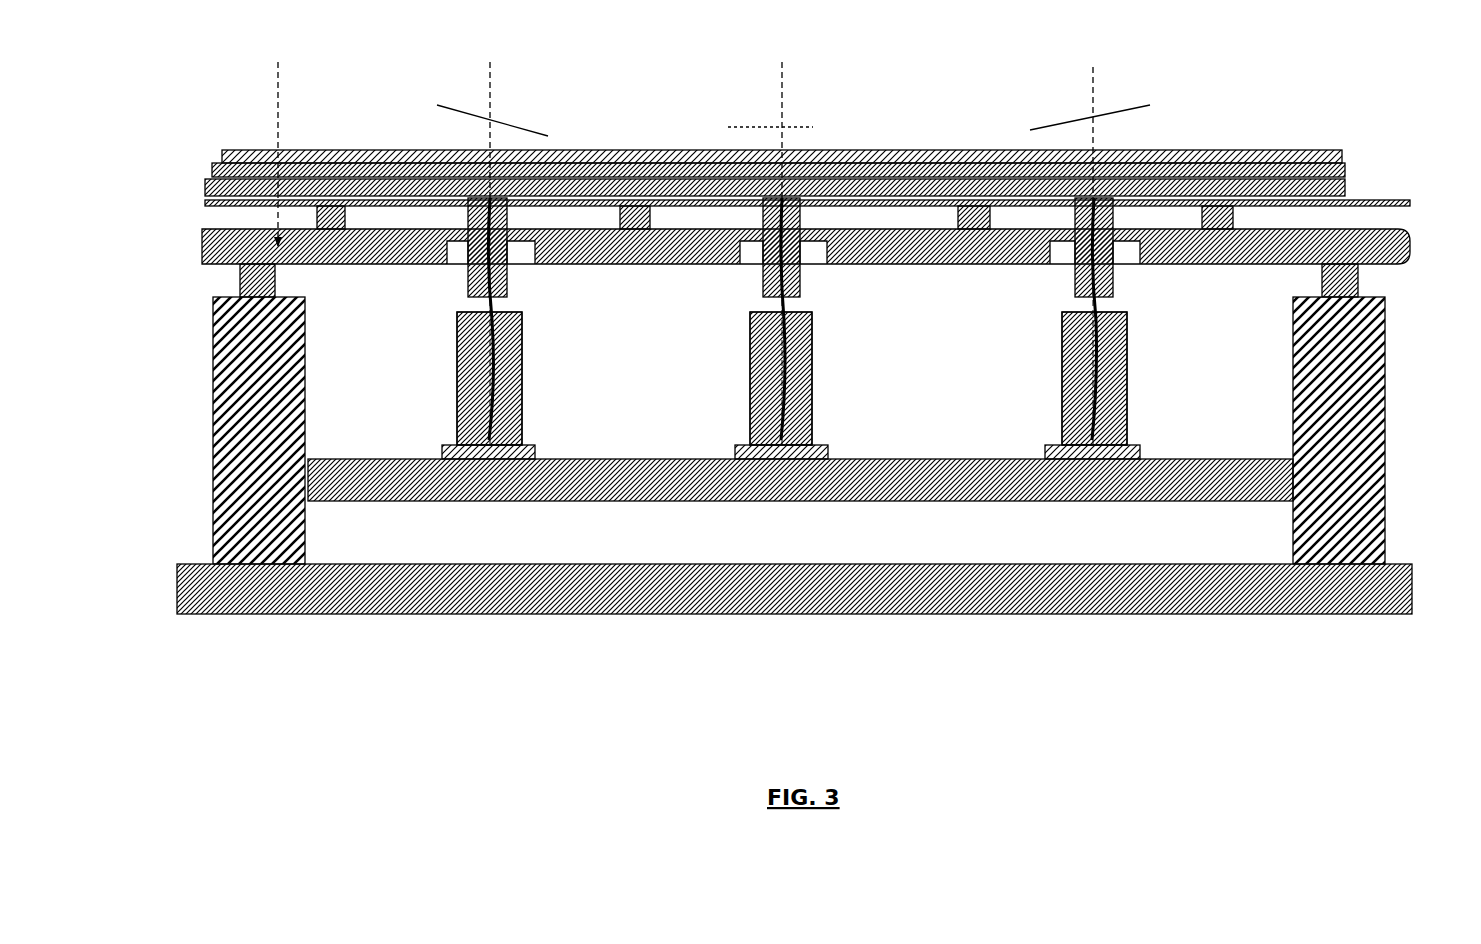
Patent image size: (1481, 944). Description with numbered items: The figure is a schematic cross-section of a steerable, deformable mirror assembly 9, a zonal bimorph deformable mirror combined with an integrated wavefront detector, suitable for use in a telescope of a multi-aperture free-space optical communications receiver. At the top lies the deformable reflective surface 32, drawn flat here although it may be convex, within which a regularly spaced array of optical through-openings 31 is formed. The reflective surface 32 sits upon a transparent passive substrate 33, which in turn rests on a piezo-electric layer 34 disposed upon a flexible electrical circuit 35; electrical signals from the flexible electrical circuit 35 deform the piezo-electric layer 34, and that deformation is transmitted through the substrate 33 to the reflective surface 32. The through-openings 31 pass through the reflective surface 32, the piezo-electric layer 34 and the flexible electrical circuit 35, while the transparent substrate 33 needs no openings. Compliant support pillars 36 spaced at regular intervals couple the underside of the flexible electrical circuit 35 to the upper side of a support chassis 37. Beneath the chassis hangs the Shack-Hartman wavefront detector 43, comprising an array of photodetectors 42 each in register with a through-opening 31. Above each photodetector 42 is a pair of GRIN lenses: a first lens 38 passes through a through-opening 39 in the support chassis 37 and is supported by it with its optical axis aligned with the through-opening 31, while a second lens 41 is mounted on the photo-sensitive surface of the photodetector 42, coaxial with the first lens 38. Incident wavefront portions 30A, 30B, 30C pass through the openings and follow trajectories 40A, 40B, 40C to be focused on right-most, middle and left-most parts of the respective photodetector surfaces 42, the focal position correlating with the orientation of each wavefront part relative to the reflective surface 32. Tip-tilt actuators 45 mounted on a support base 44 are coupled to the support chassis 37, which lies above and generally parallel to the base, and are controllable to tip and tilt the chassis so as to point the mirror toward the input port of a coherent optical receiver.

The steerable, deformable mirror assembly 9 is at (336, 676).
The first wavefront portion 30A is at (531, 130).
The second wavefront portion 30B is at (772, 122).
The third wavefront portion 30C is at (1119, 100).
The optical through-opening 31 is at (487, 150).
The reflective surface 32 is at (1249, 150).
The transparent passive substrate 33 is at (1345, 170).
The piezo-electric layer 34 is at (1346, 201).
The flexible electrical circuit 35 is at (212, 203).
The compliant support pillar 36 is at (1212, 210).
The support chassis 37 is at (1411, 256).
The first GRIN lens 38 is at (508, 296).
The through-opening in support chassis 39 is at (456, 268).
The trajectory of first wavefront portion 40A is at (503, 312).
The trajectory of second wavefront portion 40B is at (795, 312).
The trajectory of third wavefront portion 40C is at (1110, 312).
The second GRIN lens 41 is at (523, 406).
The photodetector 42 is at (523, 447).
The Shack-Hartman wavefront detector 43 is at (987, 503).
The support base 44 is at (792, 590).
The tip-tilt actuator 45 is at (212, 450).